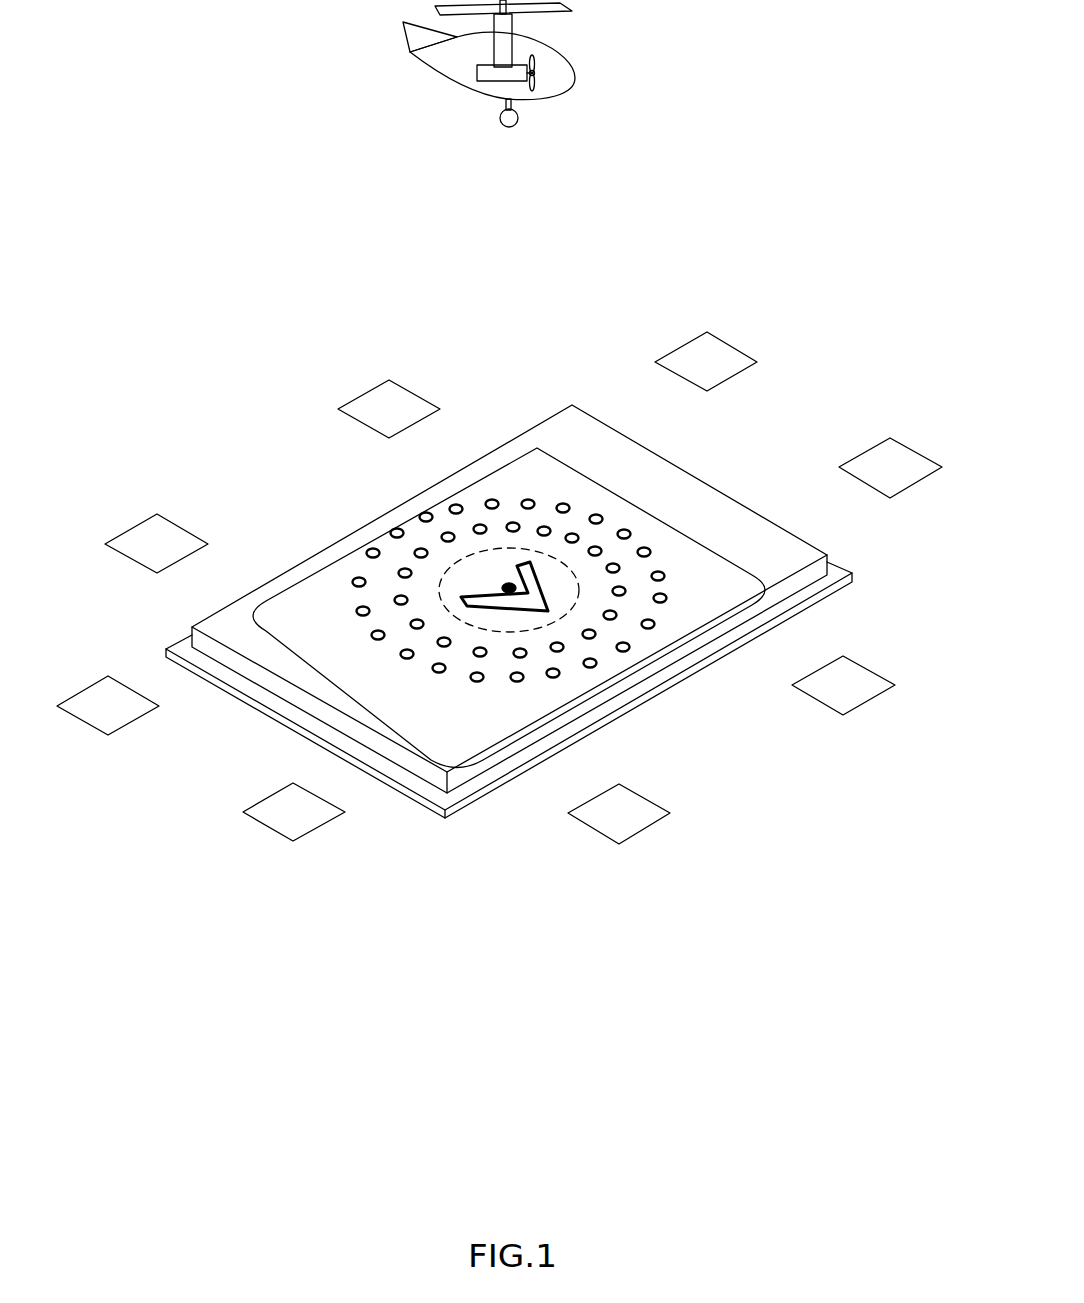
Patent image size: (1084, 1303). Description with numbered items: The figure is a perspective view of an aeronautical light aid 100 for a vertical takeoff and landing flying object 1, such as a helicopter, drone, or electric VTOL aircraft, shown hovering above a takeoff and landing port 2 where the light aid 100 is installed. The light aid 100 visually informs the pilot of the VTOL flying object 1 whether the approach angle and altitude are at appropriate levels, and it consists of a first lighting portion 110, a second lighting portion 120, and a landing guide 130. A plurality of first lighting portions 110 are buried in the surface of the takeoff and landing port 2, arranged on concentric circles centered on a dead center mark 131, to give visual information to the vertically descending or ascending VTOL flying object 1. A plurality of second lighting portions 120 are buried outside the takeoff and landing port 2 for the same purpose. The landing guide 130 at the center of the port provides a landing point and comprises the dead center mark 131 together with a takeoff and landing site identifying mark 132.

The VTOL flying object 1 is at (548, 72).
The takeoff and landing port 2 is at (587, 425).
The aeronautical light aid 100 is at (840, 145).
The first lighting portion 110 is at (627, 592).
The second lighting portion 120 is at (417, 390).
The landing guide 130 is at (582, 583).
The dead center mark 131 is at (506, 586).
The takeoff and landing site identifying mark 132 is at (533, 592).